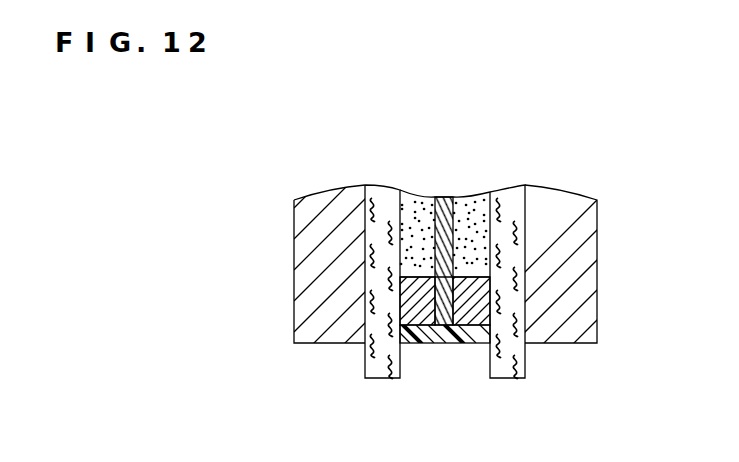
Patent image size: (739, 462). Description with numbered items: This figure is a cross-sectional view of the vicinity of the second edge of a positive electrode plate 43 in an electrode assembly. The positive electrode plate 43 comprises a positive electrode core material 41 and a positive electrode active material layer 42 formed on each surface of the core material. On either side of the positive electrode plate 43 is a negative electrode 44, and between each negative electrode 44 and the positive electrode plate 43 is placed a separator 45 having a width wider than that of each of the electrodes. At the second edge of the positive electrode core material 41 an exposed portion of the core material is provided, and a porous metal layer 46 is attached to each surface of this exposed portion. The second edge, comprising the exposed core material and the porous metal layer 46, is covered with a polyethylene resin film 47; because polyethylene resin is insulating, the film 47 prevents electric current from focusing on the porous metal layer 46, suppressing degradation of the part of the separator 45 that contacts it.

The positive electrode core material 41 is at (448, 197).
The positive electrode active material layer 42 is at (417, 197).
The positive electrode plate 43 is at (507, 132).
The negative electrode 44 is at (328, 338).
The separator 45 is at (381, 372).
The porous metal layer 46 is at (414, 345).
The polyethylene resin film 47 is at (447, 327).